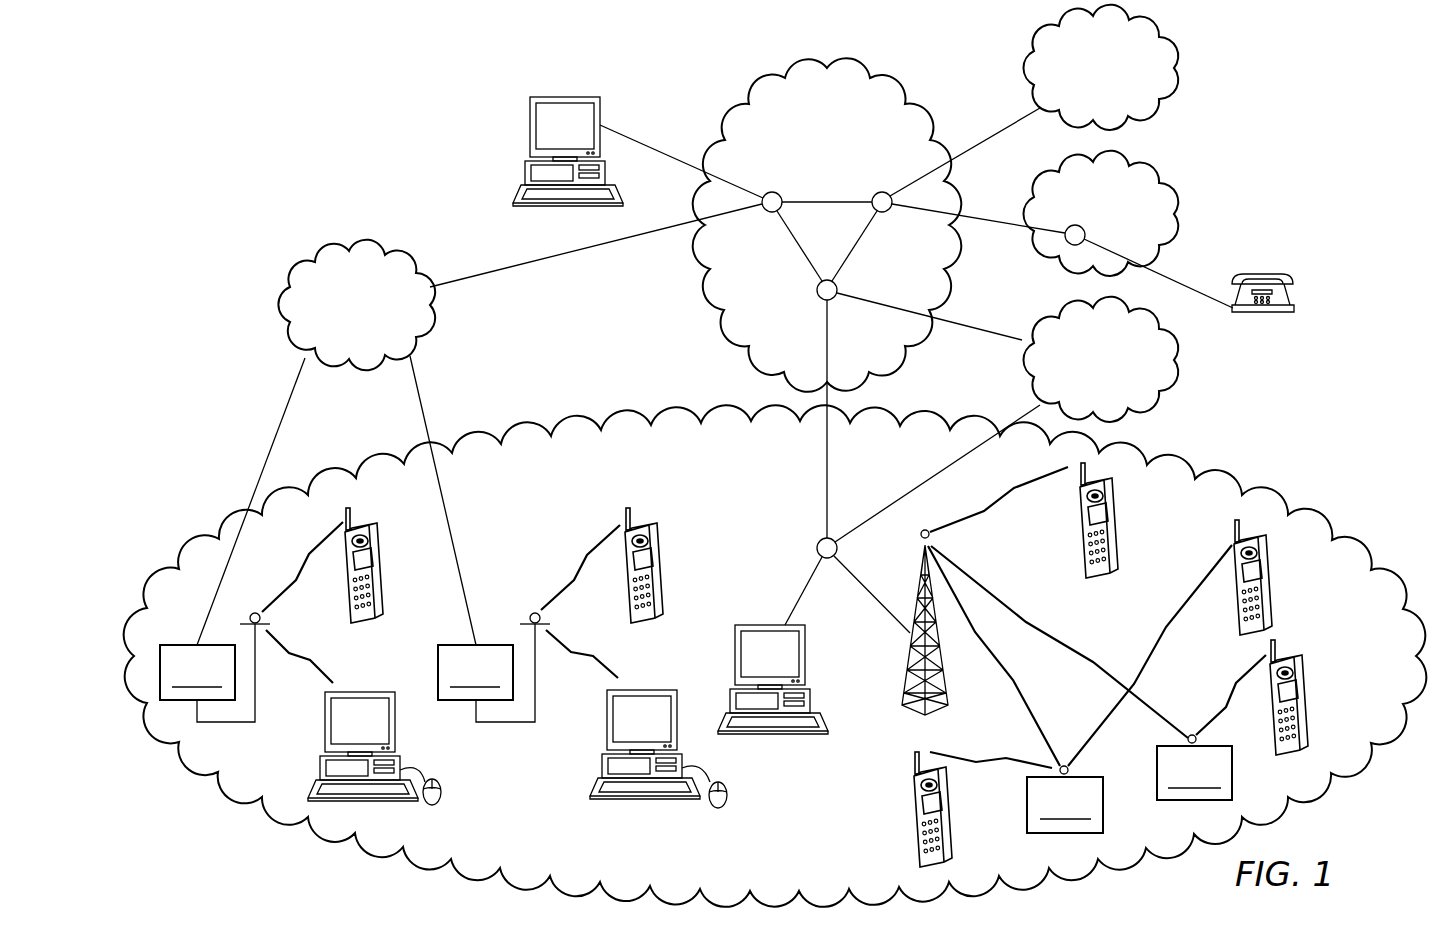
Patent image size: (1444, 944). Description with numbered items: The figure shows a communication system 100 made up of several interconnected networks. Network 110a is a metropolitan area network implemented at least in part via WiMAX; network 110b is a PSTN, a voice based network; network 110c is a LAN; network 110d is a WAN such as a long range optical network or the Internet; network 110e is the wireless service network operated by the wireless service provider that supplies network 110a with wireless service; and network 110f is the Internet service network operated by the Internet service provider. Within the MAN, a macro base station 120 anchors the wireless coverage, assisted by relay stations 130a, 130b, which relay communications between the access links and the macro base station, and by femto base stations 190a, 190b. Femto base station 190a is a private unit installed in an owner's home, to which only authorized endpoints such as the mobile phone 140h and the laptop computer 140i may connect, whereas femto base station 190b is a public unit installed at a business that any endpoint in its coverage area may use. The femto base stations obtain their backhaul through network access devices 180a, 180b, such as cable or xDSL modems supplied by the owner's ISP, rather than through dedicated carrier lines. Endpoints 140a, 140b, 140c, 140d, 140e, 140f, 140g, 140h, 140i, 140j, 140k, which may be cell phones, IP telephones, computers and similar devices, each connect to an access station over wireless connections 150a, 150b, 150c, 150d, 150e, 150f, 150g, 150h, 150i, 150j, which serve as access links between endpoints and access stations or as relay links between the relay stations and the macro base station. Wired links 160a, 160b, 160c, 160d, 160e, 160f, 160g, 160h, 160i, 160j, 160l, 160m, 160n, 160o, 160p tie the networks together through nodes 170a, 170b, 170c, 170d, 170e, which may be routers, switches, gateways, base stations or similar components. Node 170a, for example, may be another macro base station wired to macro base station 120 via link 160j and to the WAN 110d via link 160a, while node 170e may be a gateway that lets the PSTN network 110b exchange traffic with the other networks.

The communication system 100 is at (363, 95).
The MAN network 110a is at (605, 408).
The PSTN network 110b is at (1185, 182).
The LAN network 110c is at (1196, 68).
The WAN network 110d is at (755, 77).
The WSN network 110e is at (1190, 362).
The ISN network 110f is at (275, 290).
The macro base station 120 is at (905, 675).
The relay station 130a is at (1065, 799).
The relay station 130b is at (1194, 767).
The endpoint 140a is at (915, 838).
The endpoint 140b is at (1280, 567).
The endpoint 140c is at (1125, 512).
The endpoint 140d is at (1312, 692).
The endpoint 140e is at (568, 97).
The endpoint 140f is at (1267, 273).
The endpoint 140g is at (812, 705).
The endpoint 140h is at (372, 622).
The endpoint 140i is at (318, 772).
The endpoint 140j is at (600, 770).
The endpoint 140k is at (642, 622).
The wireless connection 150a is at (1232, 694).
The wireless connection 150b is at (1188, 600).
The wireless connection 150c is at (1018, 490).
The wireless connection 150d is at (1020, 713).
The wireless connection 150e is at (1085, 648).
The wireless connection 150f is at (1004, 764).
The wireless connection 150g is at (305, 553).
The wireless connection 150h is at (306, 662).
The wireless connection 150i is at (590, 662).
The wireless connection 150j is at (586, 560).
The wired link 160a is at (818, 490).
The wired link 160b is at (795, 248).
The wired link 160c is at (858, 248).
The wired link 160d is at (796, 604).
The wired link 160e is at (662, 153).
The wired link 160f is at (1212, 270).
The wired link 160g is at (996, 224).
The wired link 160h is at (988, 124).
The wired link 160i is at (830, 200).
The wired link 160j is at (869, 590).
The wired link 160l is at (983, 332).
The wired link 160m is at (898, 498).
The wired link 160n is at (420, 407).
The wired link 160o is at (600, 266).
The wired link 160p is at (286, 412).
The node 170a is at (816, 546).
The node 170b is at (810, 294).
The node 170c is at (767, 193).
The node 170d is at (884, 193).
The node 170e is at (1080, 224).
The network access device 180a is at (207, 673).
The network access device 180b is at (486, 673).
The femto base station 190a is at (272, 624).
The femto base station 190b is at (520, 623).